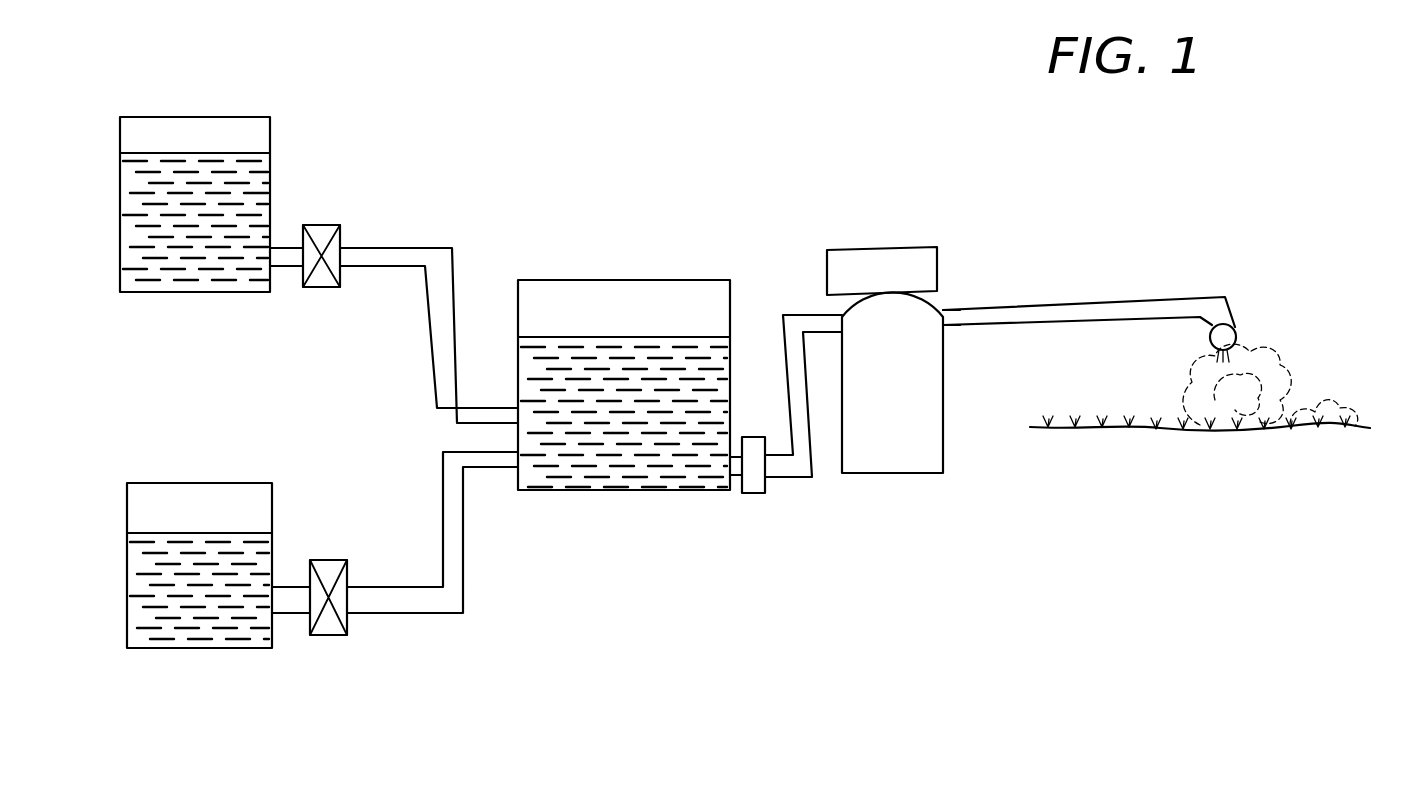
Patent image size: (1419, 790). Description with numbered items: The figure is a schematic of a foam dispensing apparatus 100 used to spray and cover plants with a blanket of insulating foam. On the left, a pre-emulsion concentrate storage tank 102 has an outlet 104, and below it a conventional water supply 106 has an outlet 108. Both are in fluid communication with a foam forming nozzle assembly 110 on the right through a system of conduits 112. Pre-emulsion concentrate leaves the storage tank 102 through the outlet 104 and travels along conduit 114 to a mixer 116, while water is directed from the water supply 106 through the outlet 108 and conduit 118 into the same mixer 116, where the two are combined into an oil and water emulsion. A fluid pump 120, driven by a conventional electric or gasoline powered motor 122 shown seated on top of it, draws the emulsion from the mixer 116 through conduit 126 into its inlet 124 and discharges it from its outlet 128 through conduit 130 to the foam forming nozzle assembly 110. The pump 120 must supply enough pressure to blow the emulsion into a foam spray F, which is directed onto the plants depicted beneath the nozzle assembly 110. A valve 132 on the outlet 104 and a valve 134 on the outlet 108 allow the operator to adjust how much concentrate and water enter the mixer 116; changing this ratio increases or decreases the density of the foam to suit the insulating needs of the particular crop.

The foam dispensing apparatus 100 is at (577, 150).
The pre-emulsion concentrate storage tank 102 is at (272, 165).
The outlet 104 is at (280, 247).
The water supply 106 is at (272, 490).
The outlet 108 is at (283, 617).
The foam forming nozzle assembly 110 is at (1243, 315).
The system of conduits 112 is at (1053, 280).
The conduit 114 is at (417, 242).
The mixer 116 is at (610, 277).
The conduit 118 is at (463, 563).
The fluid pump 120 is at (947, 452).
The motor 122 is at (880, 248).
The inlet 124 is at (837, 313).
The conduit 126 is at (787, 478).
The outlet 128 is at (943, 303).
The conduit 130 is at (1090, 298).
The valve 132 is at (320, 287).
The valve 134 is at (348, 622).
The foam spray F is at (1247, 357).